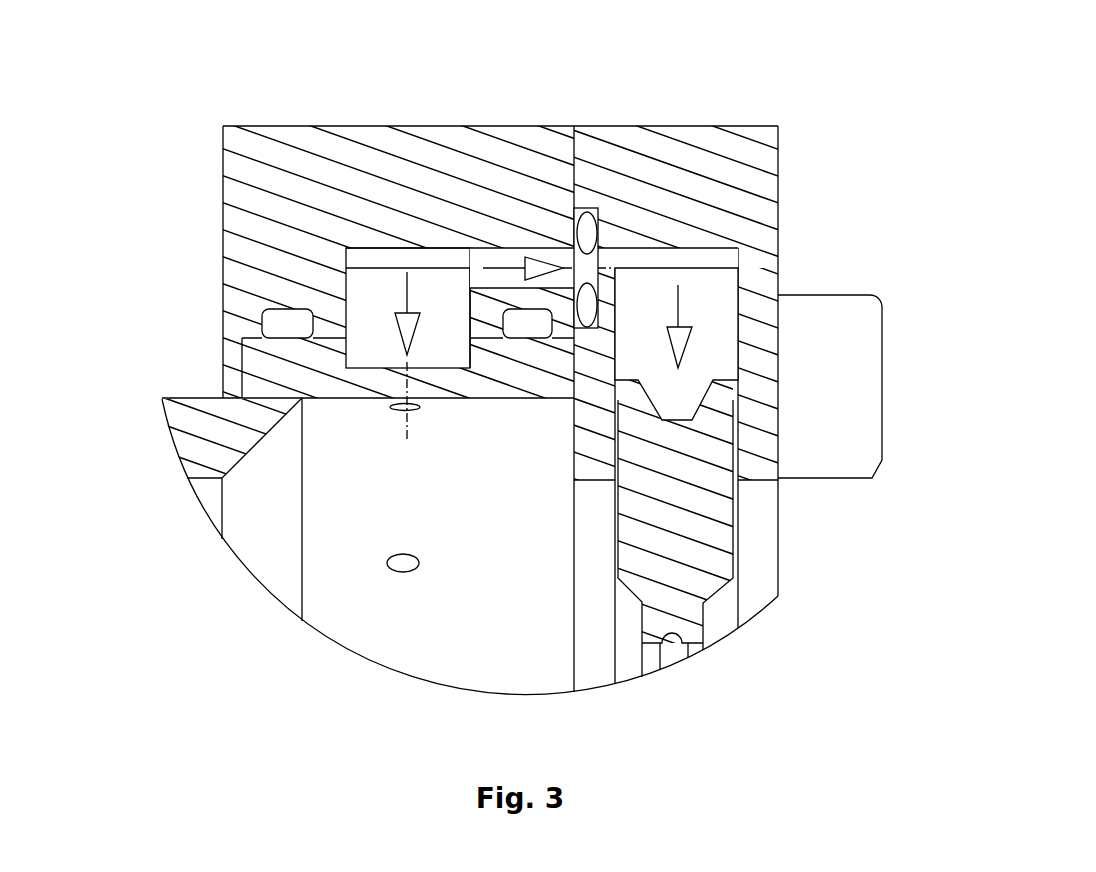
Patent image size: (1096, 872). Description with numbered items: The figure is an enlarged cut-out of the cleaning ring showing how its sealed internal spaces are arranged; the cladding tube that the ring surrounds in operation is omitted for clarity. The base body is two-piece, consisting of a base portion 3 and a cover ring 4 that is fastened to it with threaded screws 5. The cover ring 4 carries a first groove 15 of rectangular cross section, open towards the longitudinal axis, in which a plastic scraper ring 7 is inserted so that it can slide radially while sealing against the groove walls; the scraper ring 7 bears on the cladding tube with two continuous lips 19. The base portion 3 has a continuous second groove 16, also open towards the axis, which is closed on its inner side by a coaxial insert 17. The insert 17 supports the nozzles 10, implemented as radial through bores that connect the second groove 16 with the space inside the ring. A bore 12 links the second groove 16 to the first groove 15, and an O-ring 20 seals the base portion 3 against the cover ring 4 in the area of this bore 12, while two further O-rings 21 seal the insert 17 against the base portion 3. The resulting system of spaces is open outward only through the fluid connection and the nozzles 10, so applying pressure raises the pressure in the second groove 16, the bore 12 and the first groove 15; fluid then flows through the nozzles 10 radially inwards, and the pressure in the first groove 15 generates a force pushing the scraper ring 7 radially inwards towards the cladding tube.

The base portion 3 is at (533, 135).
The cover ring 4 is at (727, 148).
The threaded screws 5 is at (857, 338).
The scraper ring 7 is at (707, 552).
The nozzles 10 is at (395, 568).
The bore 12 is at (487, 255).
The first groove 15 is at (712, 295).
The second groove 16 is at (367, 287).
The insert 17 is at (203, 423).
The lips 19 is at (697, 652).
The O-ring 20 is at (588, 310).
The O-rings 21 is at (290, 320).